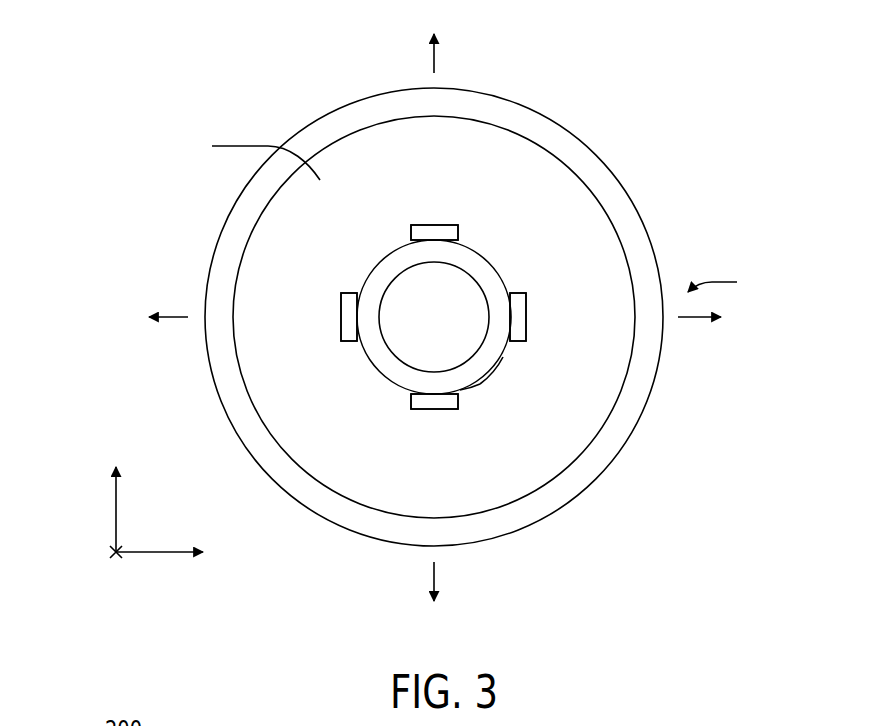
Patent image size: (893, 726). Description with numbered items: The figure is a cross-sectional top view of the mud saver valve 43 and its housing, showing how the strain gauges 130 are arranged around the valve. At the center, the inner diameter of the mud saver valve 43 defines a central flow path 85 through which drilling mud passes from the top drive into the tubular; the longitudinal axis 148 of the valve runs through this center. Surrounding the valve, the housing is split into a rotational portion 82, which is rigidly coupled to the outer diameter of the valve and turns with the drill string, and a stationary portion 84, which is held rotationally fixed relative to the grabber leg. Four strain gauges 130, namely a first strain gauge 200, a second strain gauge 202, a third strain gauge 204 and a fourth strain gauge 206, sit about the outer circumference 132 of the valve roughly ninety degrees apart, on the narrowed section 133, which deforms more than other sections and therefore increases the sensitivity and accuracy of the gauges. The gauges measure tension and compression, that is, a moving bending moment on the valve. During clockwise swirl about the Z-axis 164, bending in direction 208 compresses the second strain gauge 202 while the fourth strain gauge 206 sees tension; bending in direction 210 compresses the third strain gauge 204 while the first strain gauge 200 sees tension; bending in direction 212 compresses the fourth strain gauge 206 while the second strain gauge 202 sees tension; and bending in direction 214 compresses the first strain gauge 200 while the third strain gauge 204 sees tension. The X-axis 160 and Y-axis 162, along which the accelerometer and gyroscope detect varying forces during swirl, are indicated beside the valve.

The mud saver valve 43 is at (725, 284).
The rotational portion 82 is at (252, 156).
The stationary portion 84 is at (555, 133).
The flow path 85 is at (438, 277).
The strain gauges 130 is at (448, 224).
The outer circumference 132 is at (503, 357).
The narrowed section 133 is at (480, 384).
The longitudinal axis 148 is at (433, 317).
The X-axis 160 is at (155, 553).
The Y-axis 162 is at (116, 510).
The Z-axis 164 is at (105, 552).
The first strain gauge 200 is at (420, 224).
The second strain gauge 202 is at (526, 325).
The third strain gauge 204 is at (420, 410).
The fourth strain gauge 206 is at (341, 327).
The direction 208 is at (700, 318).
The direction 210 is at (434, 578).
The direction 212 is at (170, 318).
The direction 214 is at (434, 56).